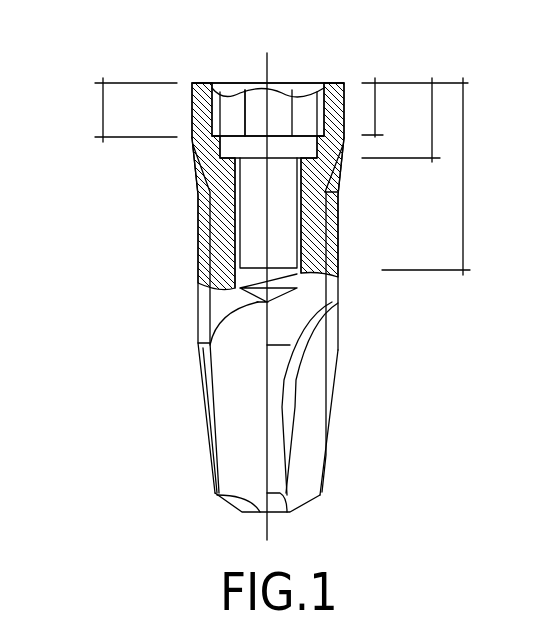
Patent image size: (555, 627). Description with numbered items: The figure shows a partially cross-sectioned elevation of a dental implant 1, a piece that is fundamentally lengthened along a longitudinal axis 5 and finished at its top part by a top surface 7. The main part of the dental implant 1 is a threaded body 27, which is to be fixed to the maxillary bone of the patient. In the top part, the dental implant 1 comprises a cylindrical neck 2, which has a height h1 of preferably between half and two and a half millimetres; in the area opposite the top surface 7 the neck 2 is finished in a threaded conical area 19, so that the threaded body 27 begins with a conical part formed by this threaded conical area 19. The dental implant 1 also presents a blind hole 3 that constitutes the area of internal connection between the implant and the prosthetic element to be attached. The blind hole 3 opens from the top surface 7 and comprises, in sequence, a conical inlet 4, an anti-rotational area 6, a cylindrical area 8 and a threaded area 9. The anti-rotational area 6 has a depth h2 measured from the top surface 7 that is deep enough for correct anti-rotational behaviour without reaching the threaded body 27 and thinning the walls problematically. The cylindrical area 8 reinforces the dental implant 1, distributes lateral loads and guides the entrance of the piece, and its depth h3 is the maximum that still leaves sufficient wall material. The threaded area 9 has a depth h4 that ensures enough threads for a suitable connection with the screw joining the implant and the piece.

The dental implant 1 is at (182, 203).
The cylindrical neck 2 is at (183, 103).
The blind hole 3 is at (230, 100).
The conical inlet 4 is at (305, 92).
The longitudinal axis 5 is at (268, 62).
The anti-rotational area 6 is at (257, 105).
The top surface 7 is at (340, 83).
The cylindrical area 8 is at (305, 150).
The threaded area 9 is at (283, 223).
The threaded conical area 19 is at (342, 149).
The threaded body 27 is at (235, 352).
The height of the neck h1 is at (103, 112).
The depth of the anti-rotational area h2 is at (377, 105).
The depth of the cylindrical area h3 is at (433, 135).
The depth of the threaded area h4 is at (463, 205).